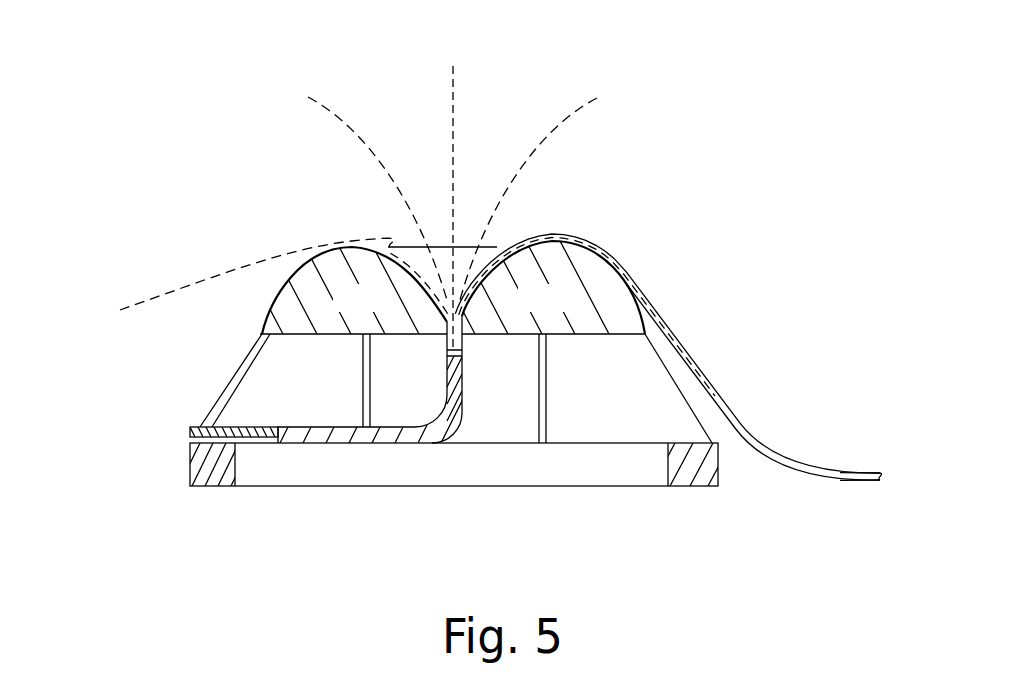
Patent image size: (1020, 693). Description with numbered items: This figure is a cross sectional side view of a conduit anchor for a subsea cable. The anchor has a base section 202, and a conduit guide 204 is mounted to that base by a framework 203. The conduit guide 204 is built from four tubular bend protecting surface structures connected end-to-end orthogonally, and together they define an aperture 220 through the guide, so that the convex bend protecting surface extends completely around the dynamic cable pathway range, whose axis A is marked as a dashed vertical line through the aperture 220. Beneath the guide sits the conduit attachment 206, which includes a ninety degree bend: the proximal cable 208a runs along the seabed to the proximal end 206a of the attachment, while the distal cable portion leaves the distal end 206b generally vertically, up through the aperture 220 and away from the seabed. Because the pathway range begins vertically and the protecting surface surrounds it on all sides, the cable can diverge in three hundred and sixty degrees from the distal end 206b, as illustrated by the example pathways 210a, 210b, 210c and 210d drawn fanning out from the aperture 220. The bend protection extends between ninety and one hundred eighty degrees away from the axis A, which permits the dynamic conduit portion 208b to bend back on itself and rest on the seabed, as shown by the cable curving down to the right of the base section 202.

The axis A is at (453, 191).
The base section 202 is at (475, 480).
The framework 203 is at (207, 403).
The conduit guide 204 is at (383, 310).
The conduit attachment 206 is at (337, 435).
The proximal end 206a is at (287, 427).
The distal end 206b is at (445, 378).
The proximal cable 208a is at (216, 448).
The dynamic conduit portion 208b is at (817, 481).
The example pathway 210a is at (658, 328).
The example pathway 210b is at (562, 187).
The example pathway 210c is at (343, 187).
The example pathway 210d is at (251, 282).
The aperture 220 is at (464, 352).